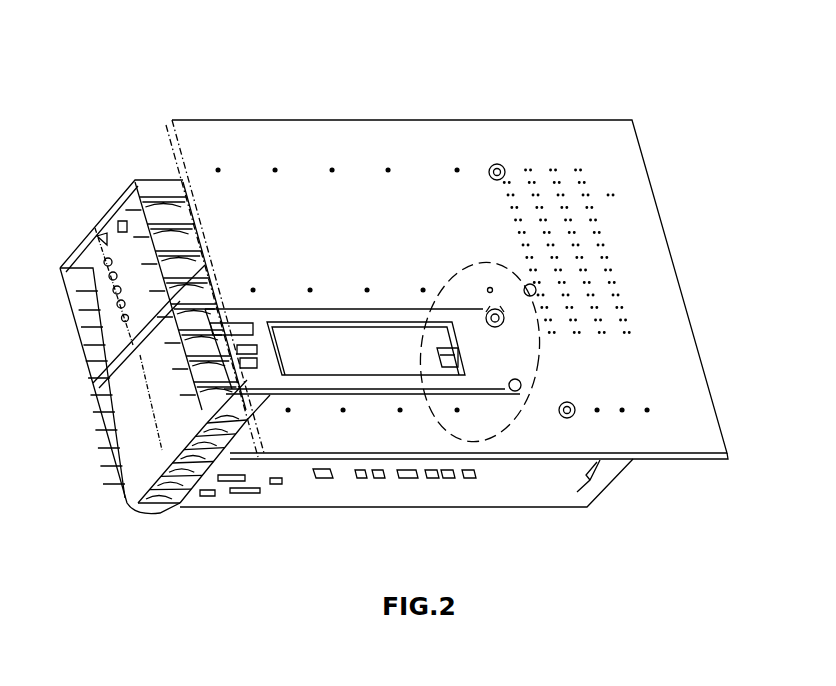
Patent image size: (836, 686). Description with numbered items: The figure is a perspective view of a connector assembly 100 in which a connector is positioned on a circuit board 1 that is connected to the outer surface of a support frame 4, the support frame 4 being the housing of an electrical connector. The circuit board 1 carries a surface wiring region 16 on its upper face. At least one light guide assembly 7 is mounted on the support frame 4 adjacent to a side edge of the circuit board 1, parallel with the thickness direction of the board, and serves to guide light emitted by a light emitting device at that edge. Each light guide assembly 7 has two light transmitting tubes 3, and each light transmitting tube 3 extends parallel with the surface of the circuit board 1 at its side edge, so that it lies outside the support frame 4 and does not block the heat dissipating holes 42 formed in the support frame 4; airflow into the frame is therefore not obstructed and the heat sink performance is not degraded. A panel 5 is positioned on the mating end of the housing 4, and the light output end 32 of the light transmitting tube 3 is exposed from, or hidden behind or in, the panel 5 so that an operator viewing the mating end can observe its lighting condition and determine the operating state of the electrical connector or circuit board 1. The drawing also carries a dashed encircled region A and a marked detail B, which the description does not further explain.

The connector assembly 100 is at (324, 84).
The circuit board 1 is at (466, 130).
The light transmitting tube 3 is at (373, 320).
The support frame 4 is at (555, 493).
The panel 5 is at (100, 228).
The light guide assembly 7 is at (303, 316).
The surface wiring region 16 is at (610, 347).
The light output end 32 is at (238, 385).
The heat dissipating holes 42 is at (468, 473).
The region A is at (500, 270).
The fastener B is at (510, 314).